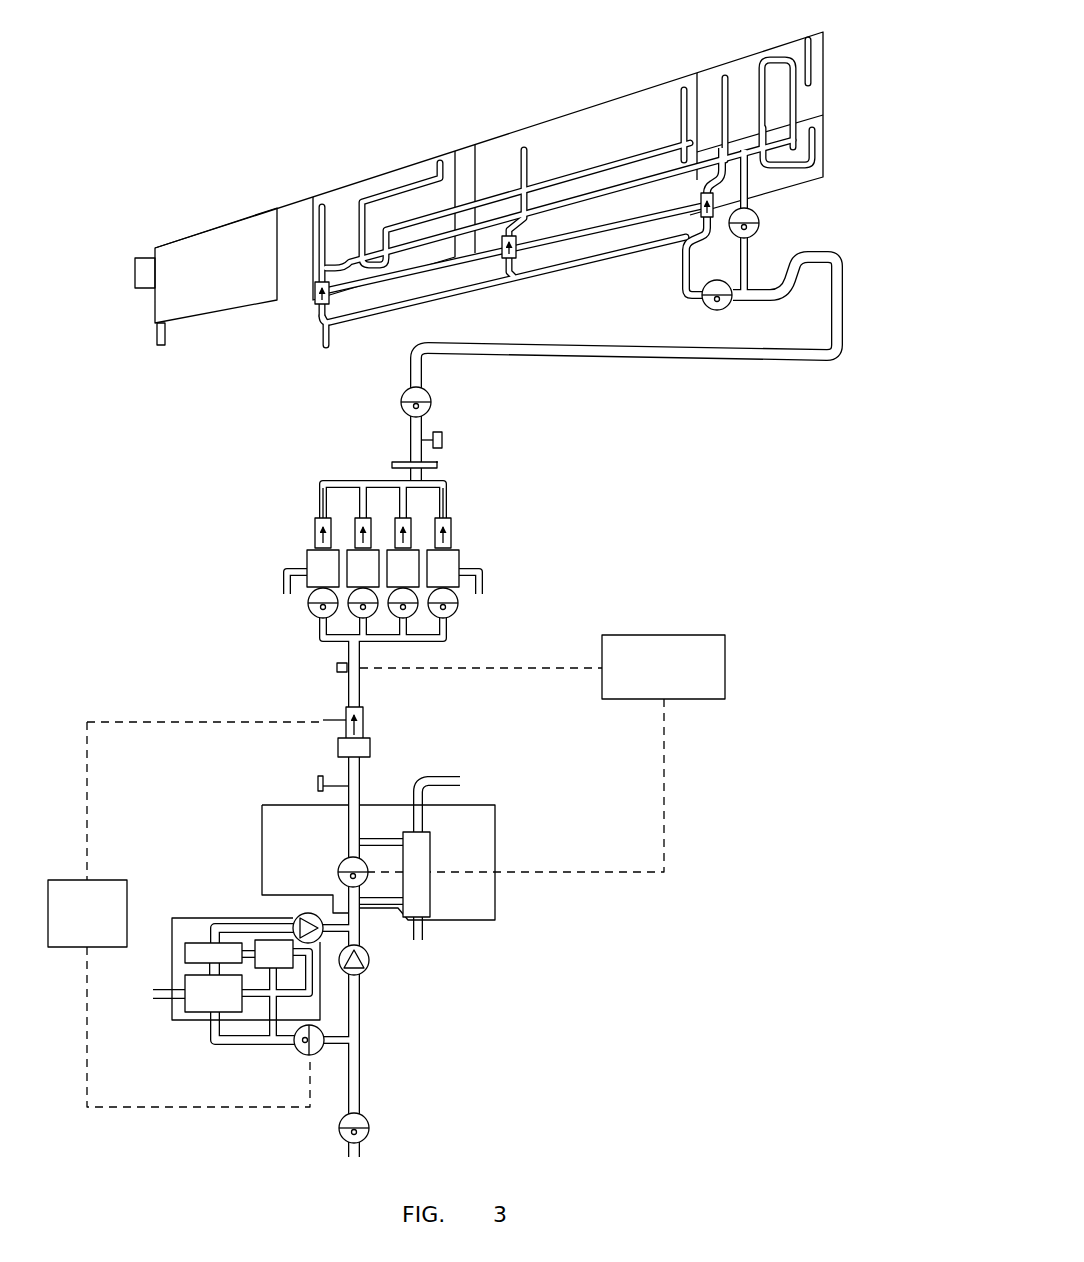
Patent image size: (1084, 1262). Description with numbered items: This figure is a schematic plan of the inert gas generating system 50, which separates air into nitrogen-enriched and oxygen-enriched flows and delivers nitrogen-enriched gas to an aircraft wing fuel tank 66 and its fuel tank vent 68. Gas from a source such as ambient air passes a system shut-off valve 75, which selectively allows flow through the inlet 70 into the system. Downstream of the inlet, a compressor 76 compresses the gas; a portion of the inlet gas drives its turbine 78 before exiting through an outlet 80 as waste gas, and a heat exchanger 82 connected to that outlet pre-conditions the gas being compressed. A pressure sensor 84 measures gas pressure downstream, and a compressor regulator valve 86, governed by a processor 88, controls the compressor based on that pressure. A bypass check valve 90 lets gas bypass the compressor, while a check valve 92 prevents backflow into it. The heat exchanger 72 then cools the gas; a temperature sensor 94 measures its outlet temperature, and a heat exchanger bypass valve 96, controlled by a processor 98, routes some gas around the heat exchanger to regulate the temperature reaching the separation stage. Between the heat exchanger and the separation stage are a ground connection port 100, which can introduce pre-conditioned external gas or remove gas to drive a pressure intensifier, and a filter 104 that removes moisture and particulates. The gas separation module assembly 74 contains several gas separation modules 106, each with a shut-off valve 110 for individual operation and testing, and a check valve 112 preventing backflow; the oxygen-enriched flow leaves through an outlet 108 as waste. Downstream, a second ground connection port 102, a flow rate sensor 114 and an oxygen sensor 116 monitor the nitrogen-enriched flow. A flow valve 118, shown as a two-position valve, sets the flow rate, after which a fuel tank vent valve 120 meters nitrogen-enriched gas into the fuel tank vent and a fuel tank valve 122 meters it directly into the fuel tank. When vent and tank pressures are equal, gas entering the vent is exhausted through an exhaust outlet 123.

The inert gas generating system 50 is at (90, 120).
The fuel tank 66 is at (495, 138).
The fuel tank vent 68 is at (165, 240).
The inlet 70 is at (366, 1095).
The heat exchanger 72 is at (440, 868).
The gas separation module assembly 74 is at (377, 554).
The system shut-off valve 75 is at (370, 1132).
The compressor 76 is at (239, 924).
The turbine 78 is at (290, 966).
The outlet 80 is at (158, 1006).
The heat exchanger 82 is at (230, 1005).
The pressure sensor 84 is at (342, 716).
The compressor regulator valve 86 is at (298, 1052).
The processor 88 is at (72, 948).
The bypass check valve 90 is at (372, 960).
The check valve 92 is at (296, 920).
The temperature sensor 94 is at (336, 667).
The heat exchanger bypass valve 96 is at (338, 870).
The processor 98 is at (665, 633).
The ground connection port 100 is at (330, 783).
The ground connection port 102 is at (442, 436).
The filter 104 is at (372, 748).
The gas separation modules 106 is at (312, 532).
The outlet 108 is at (300, 575).
The shut-off valve 110 is at (314, 607).
The check valve 112 is at (320, 498).
The flow rate sensor 114 is at (393, 465).
The oxygen sensor 116 is at (438, 463).
The flow valve 118 is at (403, 393).
The fuel tank vent valve 120 is at (760, 226).
The fuel tank valve 122 is at (728, 306).
The exhaust outlet 123 is at (136, 270).